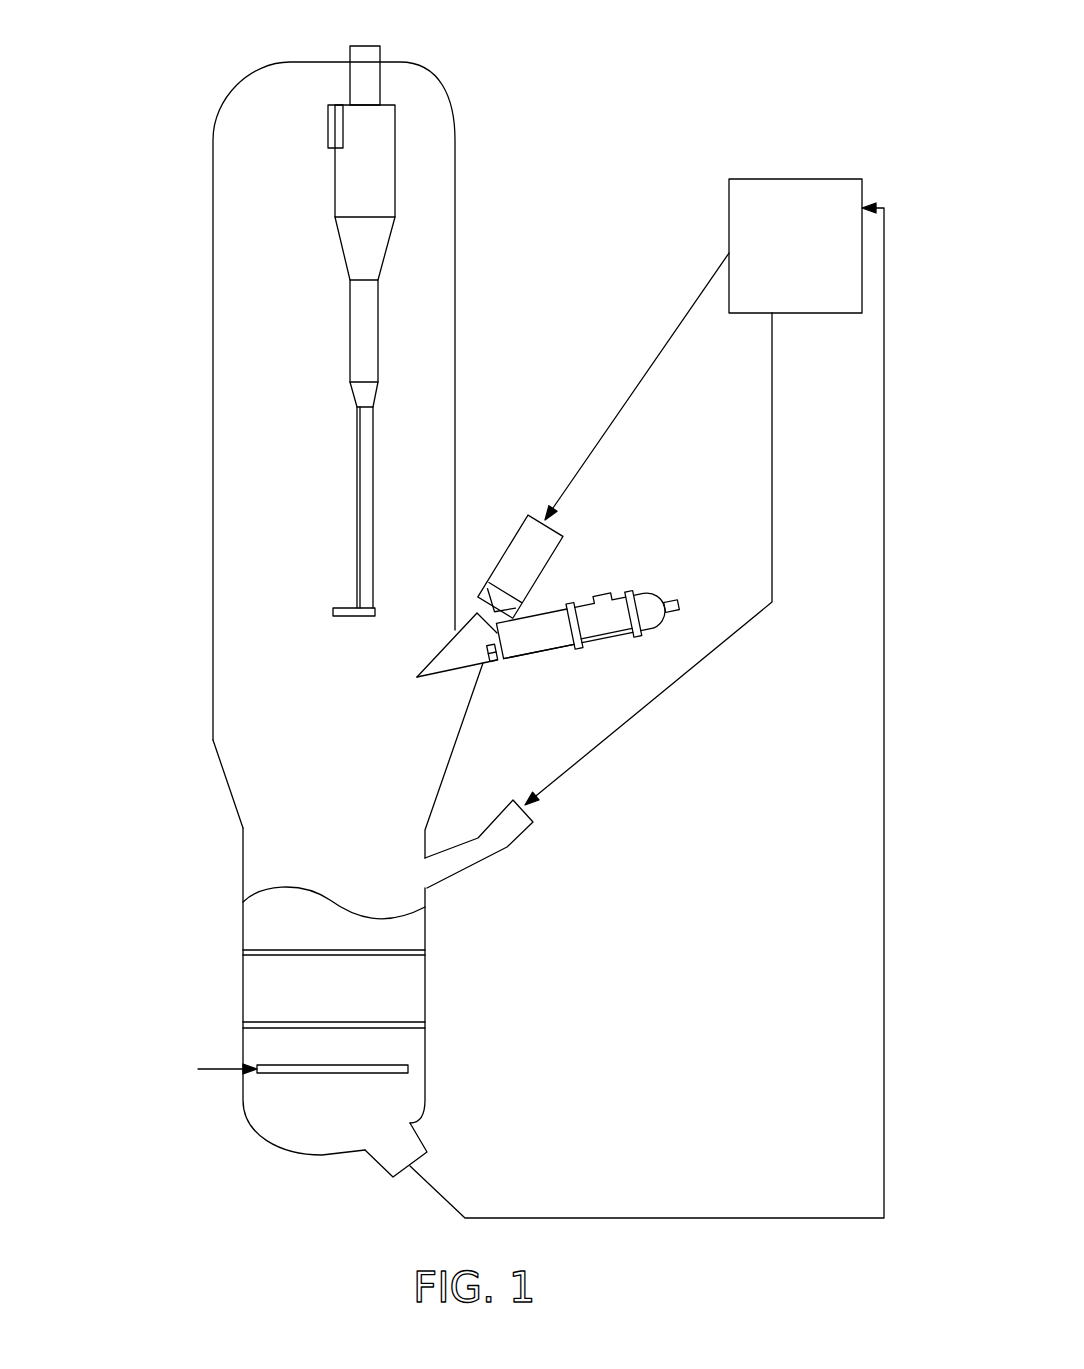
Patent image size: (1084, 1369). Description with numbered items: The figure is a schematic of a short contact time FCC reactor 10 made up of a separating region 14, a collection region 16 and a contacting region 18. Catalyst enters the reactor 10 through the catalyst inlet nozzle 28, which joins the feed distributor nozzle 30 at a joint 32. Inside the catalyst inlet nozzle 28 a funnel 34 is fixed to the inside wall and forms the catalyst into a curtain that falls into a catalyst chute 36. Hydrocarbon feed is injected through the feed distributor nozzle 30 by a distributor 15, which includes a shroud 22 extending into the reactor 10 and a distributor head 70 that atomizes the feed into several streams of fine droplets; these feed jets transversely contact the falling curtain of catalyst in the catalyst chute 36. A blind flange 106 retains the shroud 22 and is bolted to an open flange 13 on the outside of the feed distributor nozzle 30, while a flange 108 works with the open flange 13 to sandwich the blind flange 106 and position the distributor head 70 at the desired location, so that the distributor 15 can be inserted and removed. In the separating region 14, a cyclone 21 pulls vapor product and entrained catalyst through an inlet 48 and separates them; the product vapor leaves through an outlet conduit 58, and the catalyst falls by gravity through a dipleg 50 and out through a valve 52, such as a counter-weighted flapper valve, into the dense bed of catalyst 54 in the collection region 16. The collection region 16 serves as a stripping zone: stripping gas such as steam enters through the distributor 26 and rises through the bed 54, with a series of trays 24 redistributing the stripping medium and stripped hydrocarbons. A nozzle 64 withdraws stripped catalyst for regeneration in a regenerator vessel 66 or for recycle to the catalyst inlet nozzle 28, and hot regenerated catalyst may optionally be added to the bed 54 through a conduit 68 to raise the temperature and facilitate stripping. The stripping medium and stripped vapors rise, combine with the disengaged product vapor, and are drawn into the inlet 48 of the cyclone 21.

The reactor 10 is at (140, 510).
The open flange 13 is at (575, 605).
The separating region 14 is at (433, 452).
The distributor 15 is at (508, 640).
The collection region 16 is at (410, 928).
The contacting region 18 is at (433, 710).
The cyclone 21 is at (372, 248).
The shroud 22 is at (540, 643).
The trays 24 is at (425, 952).
The distributor 26 is at (403, 1072).
The catalyst inlet nozzle 28 is at (478, 602).
The feed distributor nozzle 30 is at (567, 650).
The joint 32 is at (517, 618).
The funnel 34 is at (490, 612).
The catalyst chute 36 is at (452, 660).
The inlet 48 is at (335, 127).
The dipleg 50 is at (365, 427).
The valve 52 is at (342, 615).
The dense bed of catalyst 54 is at (270, 920).
The outlet conduit 58 is at (365, 80).
The nozzle 64 is at (422, 1138).
The regenerator vessel 66 is at (781, 257).
The conduit 68 is at (518, 837).
The distributor head 70 is at (485, 672).
The blind flange 106 is at (587, 647).
The flange 108 is at (585, 598).